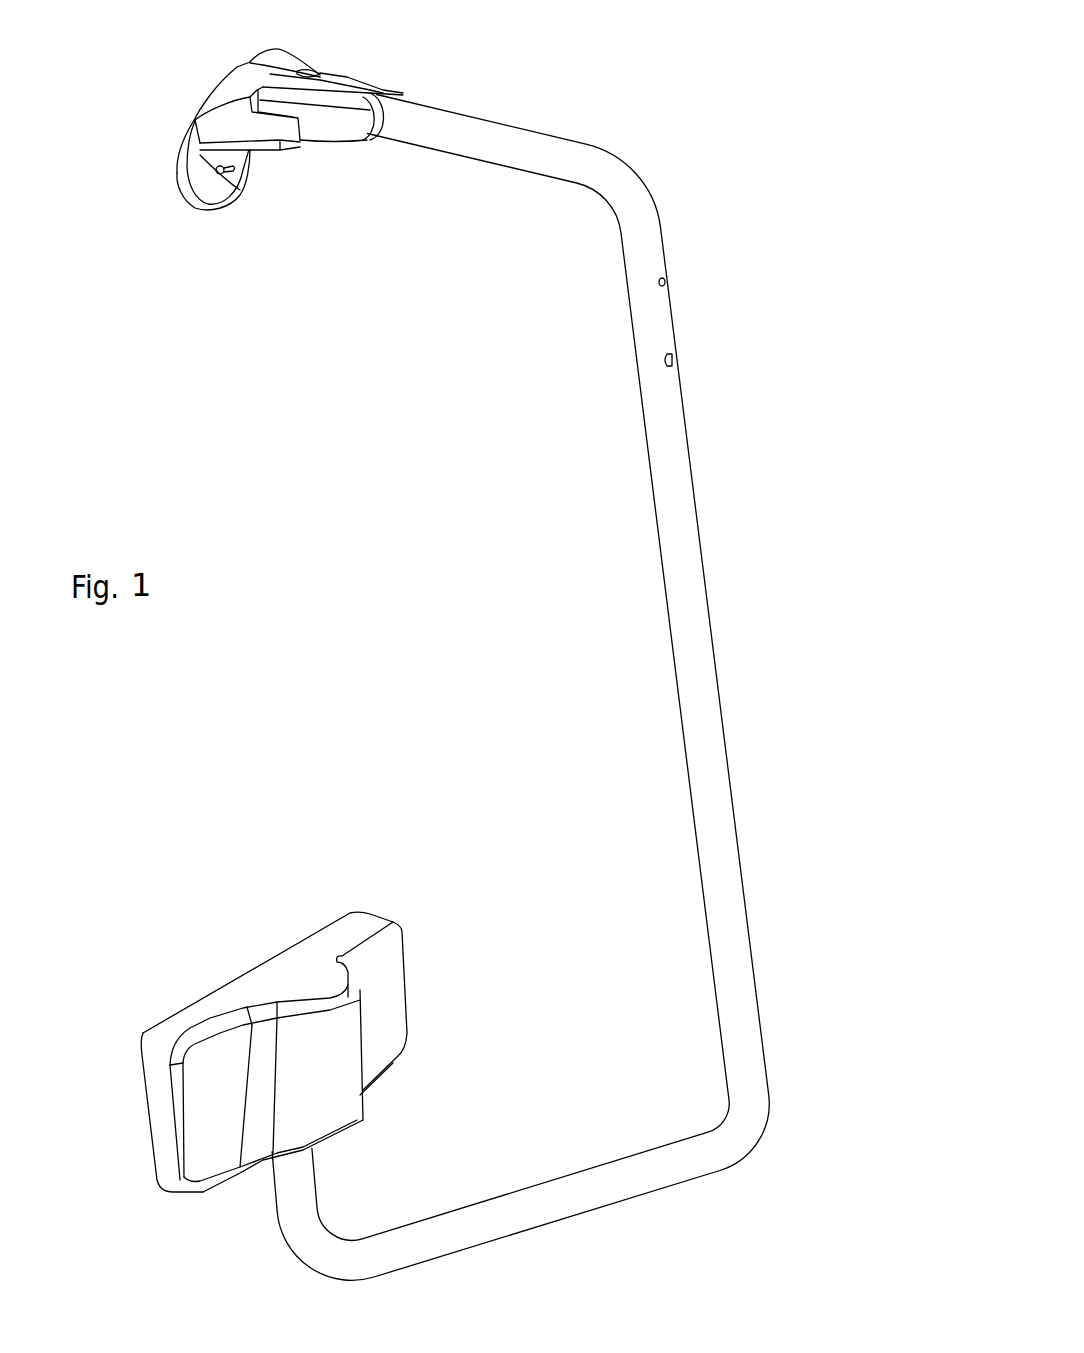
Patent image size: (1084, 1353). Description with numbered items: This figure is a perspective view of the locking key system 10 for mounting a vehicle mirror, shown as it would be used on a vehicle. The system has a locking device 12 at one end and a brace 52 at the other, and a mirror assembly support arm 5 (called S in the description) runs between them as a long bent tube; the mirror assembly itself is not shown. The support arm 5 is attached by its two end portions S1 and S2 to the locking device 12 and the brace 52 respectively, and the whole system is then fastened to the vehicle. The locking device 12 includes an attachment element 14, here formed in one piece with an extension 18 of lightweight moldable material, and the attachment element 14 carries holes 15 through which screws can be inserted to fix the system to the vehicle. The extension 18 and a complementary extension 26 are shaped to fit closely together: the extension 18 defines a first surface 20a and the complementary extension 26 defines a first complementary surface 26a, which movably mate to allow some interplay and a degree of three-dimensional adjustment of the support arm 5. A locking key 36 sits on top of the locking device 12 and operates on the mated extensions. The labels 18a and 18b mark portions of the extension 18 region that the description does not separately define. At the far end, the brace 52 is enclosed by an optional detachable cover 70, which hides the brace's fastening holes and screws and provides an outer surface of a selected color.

The locking key system 10 is at (782, 203).
The locking device 12 is at (125, 112).
The attachment element 14 is at (180, 177).
The holes 15 is at (232, 172).
The extension 18 is at (243, 141).
The hook portion 18a is at (230, 68).
The collar portion 18b is at (407, 93).
The first surface 20a is at (285, 150).
The complementary extension 26 is at (333, 127).
The first complementary surface 26a is at (322, 74).
The locking key 36 is at (315, 68).
The end portion of support arm S1 is at (383, 117).
The support arm 5 is at (688, 560).
The brace 52 is at (322, 1028).
The detachable cover 70 is at (391, 1022).
The end portion of support arm S2 is at (297, 1170).